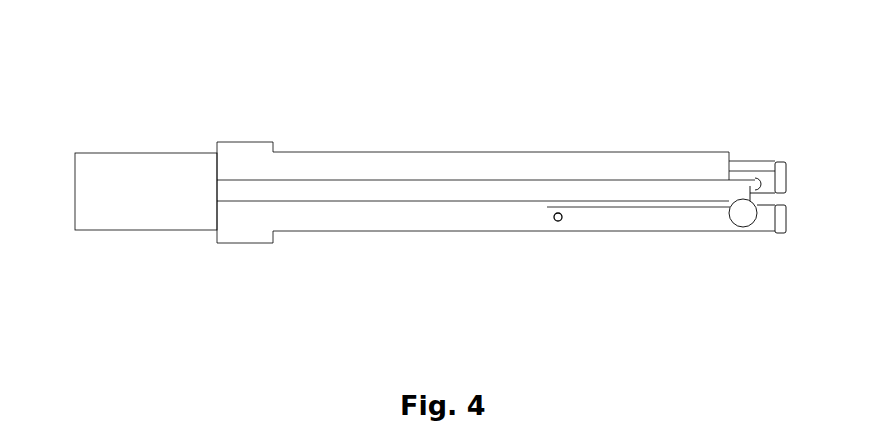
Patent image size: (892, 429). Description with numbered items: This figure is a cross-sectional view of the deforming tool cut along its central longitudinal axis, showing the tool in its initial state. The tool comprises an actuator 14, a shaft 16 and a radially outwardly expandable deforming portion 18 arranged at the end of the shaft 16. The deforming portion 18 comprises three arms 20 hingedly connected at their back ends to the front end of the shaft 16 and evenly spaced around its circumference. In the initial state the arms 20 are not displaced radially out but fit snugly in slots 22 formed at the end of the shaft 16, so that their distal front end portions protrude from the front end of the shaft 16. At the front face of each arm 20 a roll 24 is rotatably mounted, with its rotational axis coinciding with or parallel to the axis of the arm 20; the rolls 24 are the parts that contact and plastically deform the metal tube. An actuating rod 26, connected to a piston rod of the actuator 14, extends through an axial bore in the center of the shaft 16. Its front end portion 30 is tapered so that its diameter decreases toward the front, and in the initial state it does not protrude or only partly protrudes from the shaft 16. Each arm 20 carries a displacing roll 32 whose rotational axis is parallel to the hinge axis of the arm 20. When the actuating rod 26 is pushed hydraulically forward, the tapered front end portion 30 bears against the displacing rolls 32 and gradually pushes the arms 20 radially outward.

The actuator 14 is at (160, 137).
The shaft 16 is at (411, 127).
The radially outwardly expandable deforming portion 18 is at (733, 123).
The arm 20 is at (615, 218).
The slot 22 is at (547, 208).
The roll 24 is at (780, 232).
The actuating rod 26 is at (381, 192).
The front end portion 30 is at (692, 187).
The displacing roll 32 is at (742, 217).